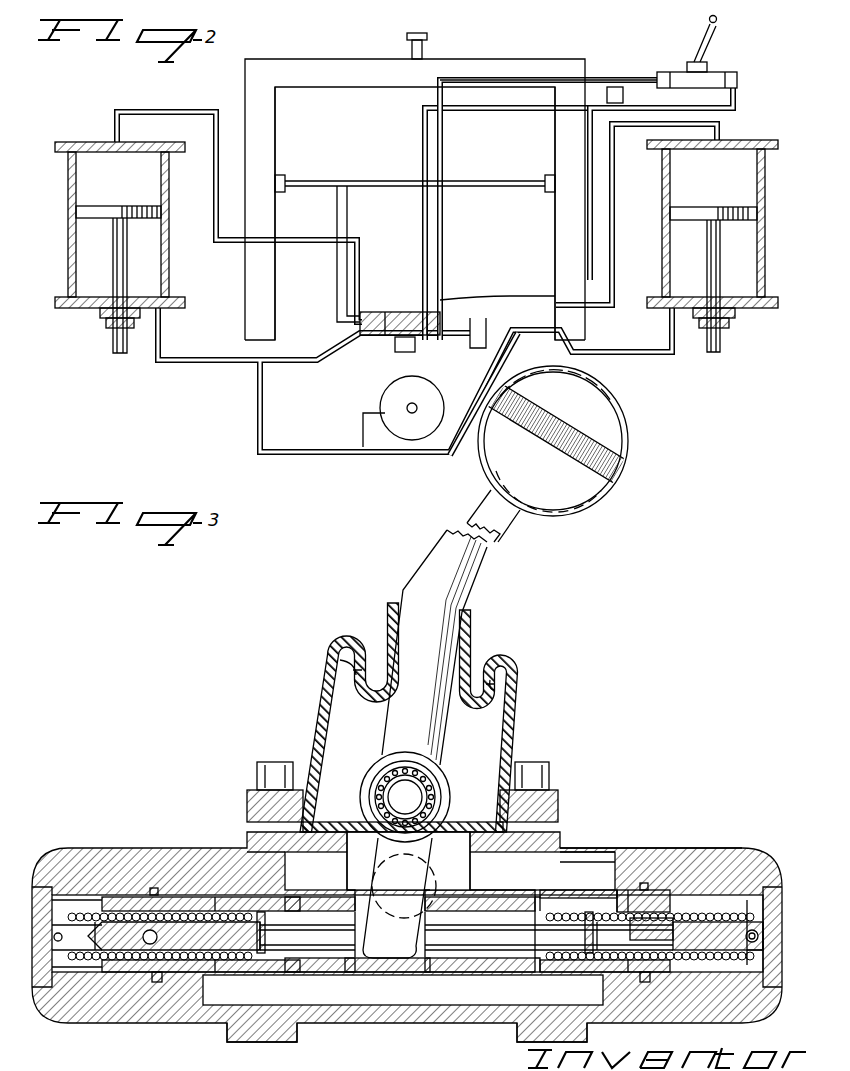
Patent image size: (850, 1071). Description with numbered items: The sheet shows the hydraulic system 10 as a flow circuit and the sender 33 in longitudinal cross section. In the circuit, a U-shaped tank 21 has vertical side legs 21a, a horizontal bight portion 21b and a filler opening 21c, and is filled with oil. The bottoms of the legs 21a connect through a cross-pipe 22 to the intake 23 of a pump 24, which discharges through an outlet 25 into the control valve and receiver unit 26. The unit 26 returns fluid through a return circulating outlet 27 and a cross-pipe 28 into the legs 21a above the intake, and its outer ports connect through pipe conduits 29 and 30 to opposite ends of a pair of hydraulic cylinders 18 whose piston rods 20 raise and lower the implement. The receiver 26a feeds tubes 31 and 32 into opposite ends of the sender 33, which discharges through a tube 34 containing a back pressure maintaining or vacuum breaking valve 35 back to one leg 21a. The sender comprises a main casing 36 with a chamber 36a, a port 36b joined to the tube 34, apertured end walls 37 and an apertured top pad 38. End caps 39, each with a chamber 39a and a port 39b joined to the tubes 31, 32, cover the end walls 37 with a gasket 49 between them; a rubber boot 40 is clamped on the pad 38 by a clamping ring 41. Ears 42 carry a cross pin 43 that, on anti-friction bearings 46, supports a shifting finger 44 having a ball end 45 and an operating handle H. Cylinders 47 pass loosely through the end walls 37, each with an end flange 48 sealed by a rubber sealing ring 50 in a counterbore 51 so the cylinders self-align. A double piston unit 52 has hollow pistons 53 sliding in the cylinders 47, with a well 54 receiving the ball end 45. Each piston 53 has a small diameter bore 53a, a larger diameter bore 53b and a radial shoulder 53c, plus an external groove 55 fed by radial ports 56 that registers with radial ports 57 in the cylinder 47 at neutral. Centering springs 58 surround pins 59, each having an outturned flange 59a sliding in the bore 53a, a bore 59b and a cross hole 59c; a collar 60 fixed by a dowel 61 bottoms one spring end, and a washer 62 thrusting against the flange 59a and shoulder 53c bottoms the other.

In FIG. 2, the system 10 is at (455, 58).
In FIG. 2, the hydraulic rams or cylinders 18 is at (68, 205).
In FIG. 2, the piston rods 20 is at (112, 346).
In FIG. 2, the U-shaped tank 21 is at (278, 86).
In FIG. 2, the vertical side legs 21a is at (262, 142).
In FIG. 2, the horizontal bight portion 21b is at (517, 66).
In FIG. 2, the filler opening 21c is at (411, 46).
In FIG. 2, the cross-pipe 22 is at (410, 452).
In FIG. 2, the intake 23 is at (362, 426).
In FIG. 2, the pump 24 is at (390, 394).
In FIG. 2, the outlet 25 is at (467, 385).
In FIG. 2, the control valve and receiver unit 26 is at (382, 326).
In FIG. 2, the receiver 26a is at (406, 352).
In FIG. 2, the return circulating outlet 27 is at (336, 280).
In FIG. 2, the cross-pipe 28 is at (373, 180).
In FIG. 2, the pipe conduit 29 is at (221, 240).
In FIG. 2, the pipe conduit 30 is at (212, 362).
In FIG. 2, the tube 31 is at (441, 248).
In FIG. 2, the tube 32 is at (427, 218).
In FIG. 2, the sender 33 is at (724, 72).
In FIG. 3, the sender 33 is at (590, 846).
In FIG. 2, the tube 34 is at (600, 92).
In FIG. 2, the back pressure maintaining or vacuum breaking valve 35 is at (612, 86).
In FIG. 2, the operating handle H is at (716, 22).
In FIG. 3, the main housing or casing 36 is at (232, 840).
In FIG. 3, the chamber 36a is at (445, 1022).
In FIG. 3, the port 36b is at (368, 892).
In FIG. 3, the end walls 37 is at (190, 975).
In FIG. 3, the top pad 38 is at (480, 890).
In FIG. 3, the end caps 39 is at (102, 862).
In FIG. 3, the chamber 39a is at (58, 886).
In FIG. 3, the port 39b is at (66, 985).
In FIG. 3, the rubber boot 40 is at (515, 728).
In FIG. 3, the clamping ring 41 is at (560, 790).
In FIG. 3, the ears 42 is at (456, 820).
In FIG. 3, the cross pin 43 is at (412, 793).
In FIG. 3, the shifting finger 44 is at (372, 780).
In FIG. 3, the ball end 45 is at (415, 866).
In FIG. 3, the anti-friction bearings 46 is at (380, 826).
In FIG. 3, the cylinders 47 is at (292, 970).
In FIG. 3, the end flange or head 48 is at (172, 896).
In FIG. 3, the gasket 49 is at (150, 896).
In FIG. 3, the rubber sealing ring 50 is at (154, 984).
In FIG. 3, the counterbore 51 is at (116, 975).
In FIG. 3, the double piston unit 52 is at (388, 990).
In FIG. 3, the pistons 53 is at (268, 966).
In FIG. 3, the small diameter bore 53a is at (300, 897).
In FIG. 3, the larger diameter bore 53b is at (218, 897).
In FIG. 3, the radial shoulder or step 53c is at (254, 897).
In FIG. 3, the well 54 is at (376, 972).
In FIG. 3, the external groove 55 is at (208, 972).
In FIG. 3, the radial ports 56 is at (210, 896).
In FIG. 3, the radial ports 57 is at (218, 972).
In FIG. 3, the centering springs 58 is at (86, 968).
In FIG. 3, the pin 59 is at (770, 900).
In FIG. 3, the outturned flange 59a is at (560, 972).
In FIG. 3, the bore 59b is at (522, 914).
In FIG. 3, the cross hole 59c is at (628, 890).
In FIG. 3, the collar 60 is at (756, 950).
In FIG. 3, the cross pin or dowel 61 is at (758, 934).
In FIG. 3, the washer 62 is at (522, 911).